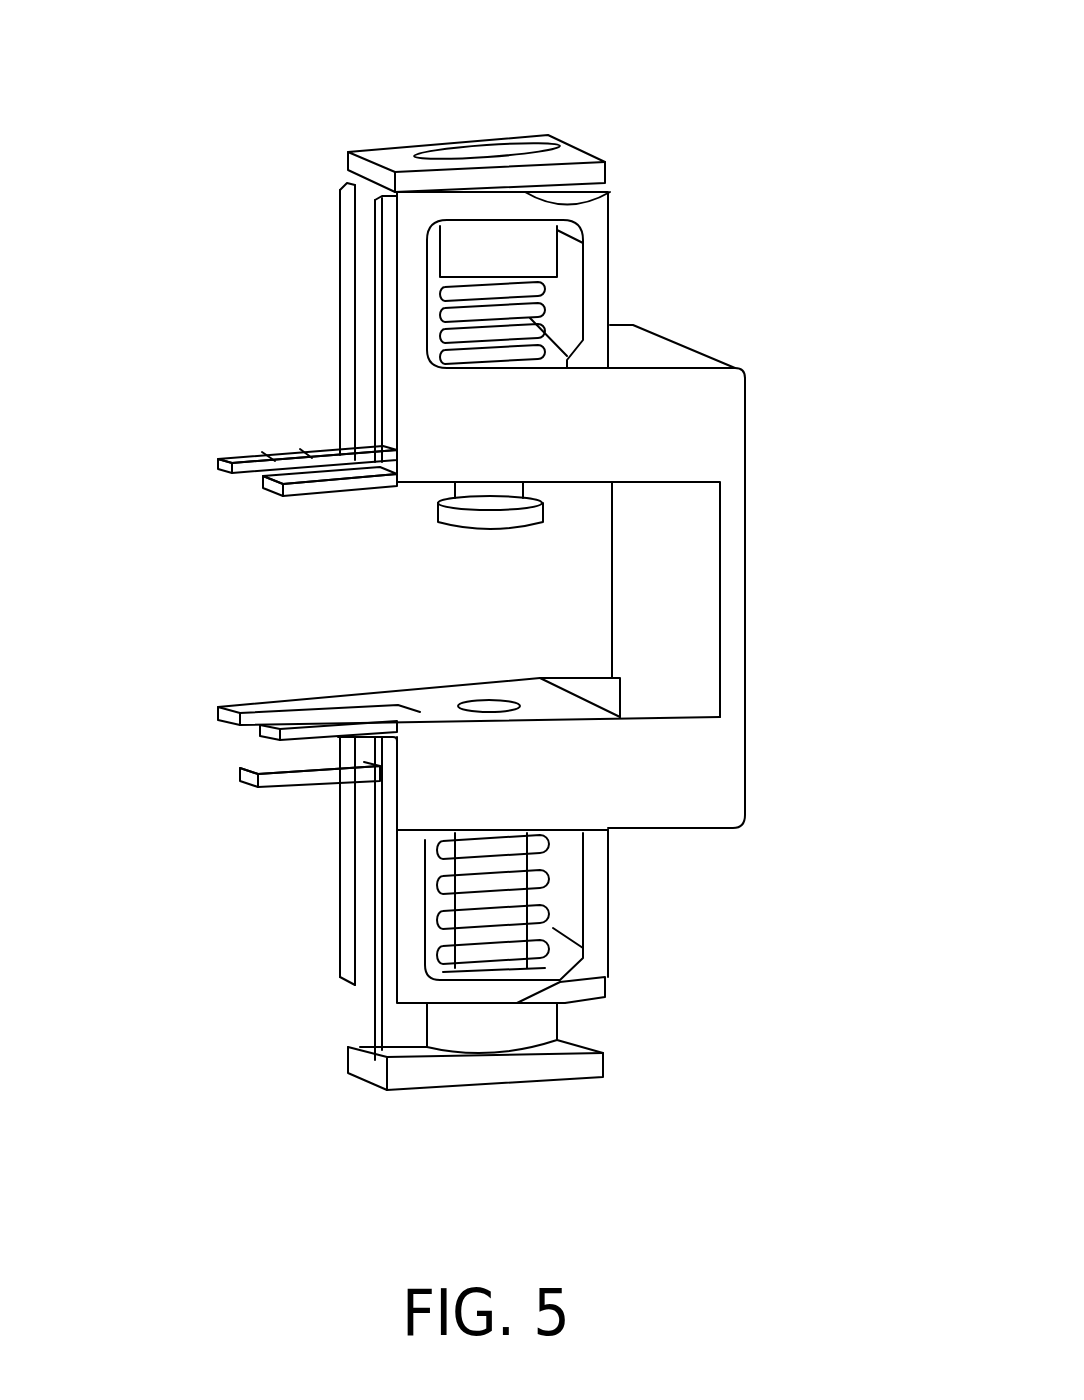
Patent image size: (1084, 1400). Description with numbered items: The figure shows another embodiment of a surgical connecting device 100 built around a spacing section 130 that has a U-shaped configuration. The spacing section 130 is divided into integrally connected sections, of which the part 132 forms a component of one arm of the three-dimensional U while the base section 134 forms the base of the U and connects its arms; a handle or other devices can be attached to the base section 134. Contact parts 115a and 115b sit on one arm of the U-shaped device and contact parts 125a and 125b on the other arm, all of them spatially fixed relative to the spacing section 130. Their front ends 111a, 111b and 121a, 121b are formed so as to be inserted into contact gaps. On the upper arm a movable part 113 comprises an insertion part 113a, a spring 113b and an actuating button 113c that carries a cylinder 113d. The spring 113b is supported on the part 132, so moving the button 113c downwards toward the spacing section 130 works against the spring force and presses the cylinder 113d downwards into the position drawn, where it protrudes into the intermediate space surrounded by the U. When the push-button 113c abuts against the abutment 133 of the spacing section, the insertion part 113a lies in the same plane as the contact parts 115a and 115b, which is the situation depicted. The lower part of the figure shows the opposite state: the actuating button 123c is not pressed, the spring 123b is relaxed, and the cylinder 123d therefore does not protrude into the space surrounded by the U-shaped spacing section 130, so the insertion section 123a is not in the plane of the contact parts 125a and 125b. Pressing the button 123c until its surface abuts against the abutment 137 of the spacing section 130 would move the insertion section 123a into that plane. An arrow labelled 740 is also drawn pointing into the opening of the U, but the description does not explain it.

The surgical connecting device 100 is at (936, 569).
The movable part 113 is at (577, 140).
The insertion part 113a is at (285, 455).
The spring 113b is at (540, 300).
The actuating button 113c is at (467, 133).
The cylinder 113d is at (525, 333).
The contact part 115a is at (253, 457).
The contact part 115b is at (310, 478).
The front end 111a is at (217, 468).
The front end 111b is at (270, 484).
The spacing section 130 is at (773, 521).
The part of the spacing section 132 is at (655, 425).
The abutment 133 is at (610, 201).
The base section 134 is at (733, 647).
The abutment 137 is at (610, 978).
The board insertion direction 740 is at (318, 628).
The front end 121a is at (260, 724).
The front end 121b is at (273, 734).
The insertion section 123a is at (335, 741).
The spring 123b is at (560, 868).
The actuating button 123c is at (540, 1078).
The cylinder 123d is at (490, 704).
The contact part 125a is at (243, 700).
The contact part 125b is at (300, 768).